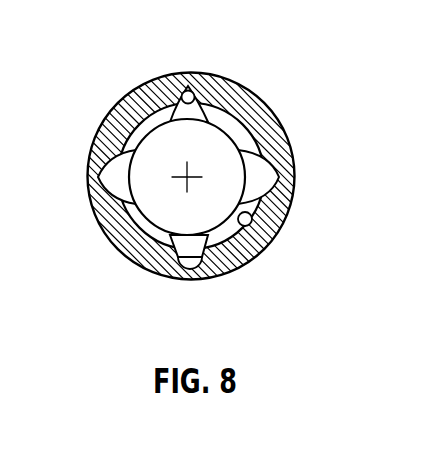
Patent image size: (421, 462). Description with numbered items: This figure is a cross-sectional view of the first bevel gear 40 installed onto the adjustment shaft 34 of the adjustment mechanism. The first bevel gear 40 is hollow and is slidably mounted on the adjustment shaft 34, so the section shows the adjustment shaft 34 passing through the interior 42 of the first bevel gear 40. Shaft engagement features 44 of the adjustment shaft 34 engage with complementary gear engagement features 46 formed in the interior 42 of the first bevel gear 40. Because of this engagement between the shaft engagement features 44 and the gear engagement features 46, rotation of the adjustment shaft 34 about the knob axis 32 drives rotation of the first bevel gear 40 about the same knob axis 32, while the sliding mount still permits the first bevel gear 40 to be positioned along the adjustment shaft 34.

The first bevel gear 40 is at (258, 93).
The shaft engagement features 44 is at (153, 83).
The adjustment shaft 34 is at (150, 221).
The gear engagement features 46 is at (181, 96).
The interior 42 is at (256, 215).
The knob axis 32 is at (175, 178).